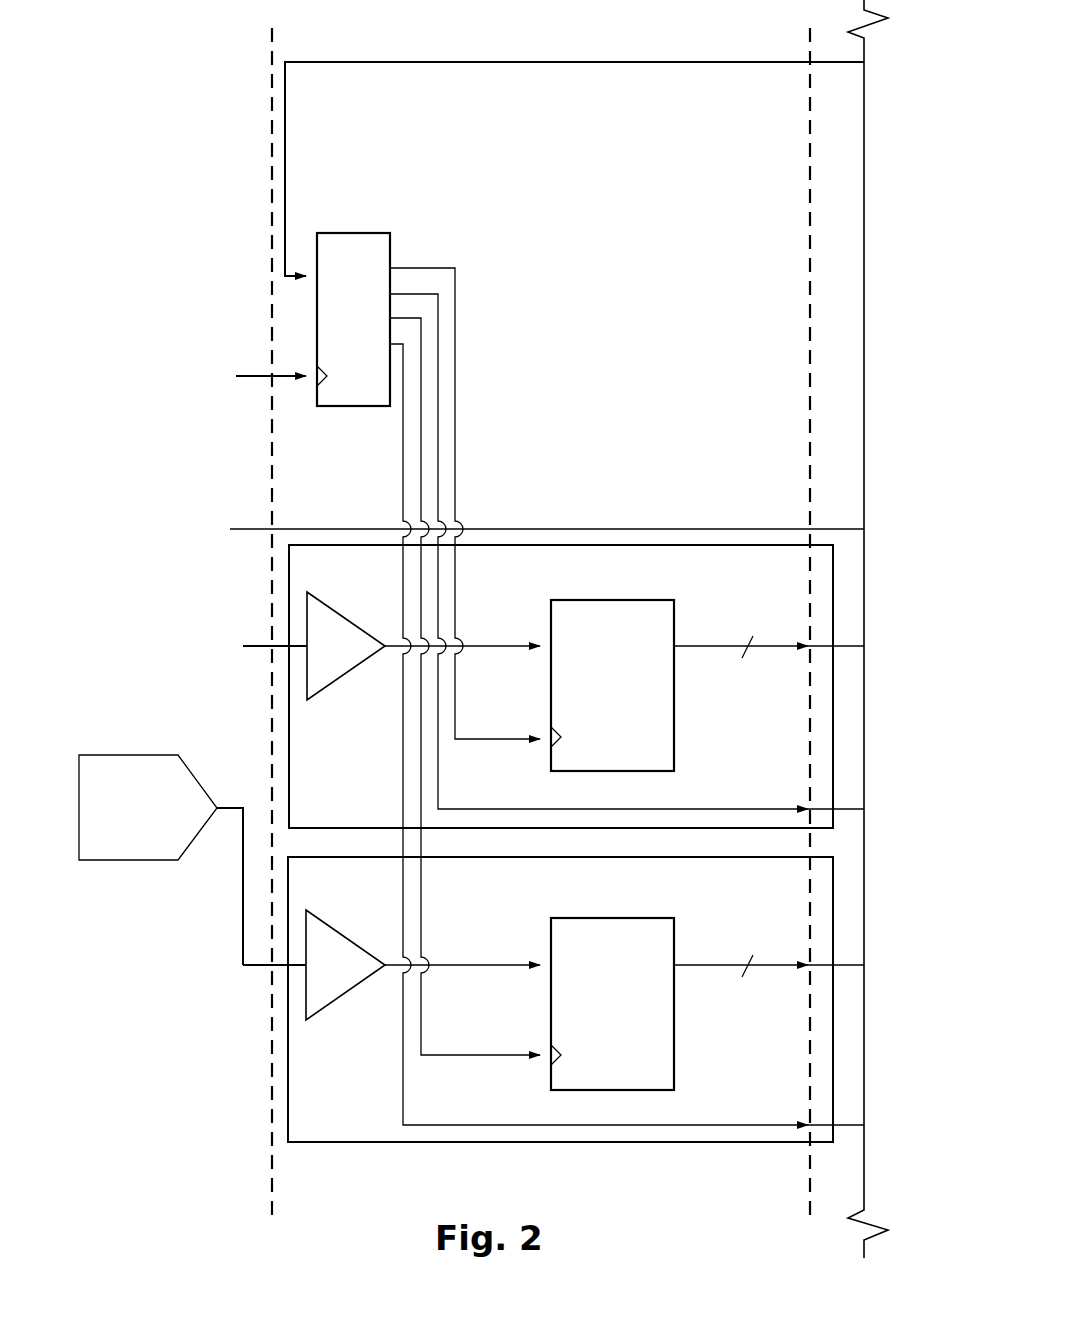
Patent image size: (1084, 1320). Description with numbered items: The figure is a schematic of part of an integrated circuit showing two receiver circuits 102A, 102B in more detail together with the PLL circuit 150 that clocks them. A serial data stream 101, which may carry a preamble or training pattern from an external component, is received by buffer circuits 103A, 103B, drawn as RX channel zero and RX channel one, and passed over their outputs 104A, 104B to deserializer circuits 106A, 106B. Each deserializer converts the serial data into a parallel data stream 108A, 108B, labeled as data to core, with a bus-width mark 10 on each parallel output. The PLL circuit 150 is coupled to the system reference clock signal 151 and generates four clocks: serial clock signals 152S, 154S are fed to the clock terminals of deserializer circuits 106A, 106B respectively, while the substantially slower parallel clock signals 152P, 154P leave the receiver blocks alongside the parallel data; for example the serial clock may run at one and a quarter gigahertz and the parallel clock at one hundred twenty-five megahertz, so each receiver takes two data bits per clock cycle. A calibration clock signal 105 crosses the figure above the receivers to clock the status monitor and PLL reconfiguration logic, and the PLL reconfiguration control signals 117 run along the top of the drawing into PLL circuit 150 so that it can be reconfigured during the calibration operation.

The PLL reconfiguration control signals 117 is at (563, 64).
The phase-locked loop (PLL) circuit 150 is at (374, 396).
The system reference clock signal 151 is at (255, 372).
The serial clock signal 152S is at (455, 283).
The parallel clock signal 152P is at (438, 758).
The serial clock signal 154S is at (527, 1052).
The parallel clock signal 154P is at (403, 437).
The calibration clock signal 105 is at (253, 528).
The data stream 101 is at (130, 862).
The receiver circuit 102A is at (289, 565).
The buffer circuit 103A is at (318, 700).
The RX Ch0 output 104A is at (390, 650).
The deserializer circuit 106A is at (636, 711).
The parallel data stream 108A is at (785, 650).
The bus width indicator 10 is at (746, 817).
The receiver circuit 102B is at (388, 1143).
The buffer circuit 103B is at (318, 1020).
The RX Ch1 output 104B is at (392, 970).
The deserializer circuit 106B is at (636, 1030).
The parallel data stream 108B is at (785, 970).